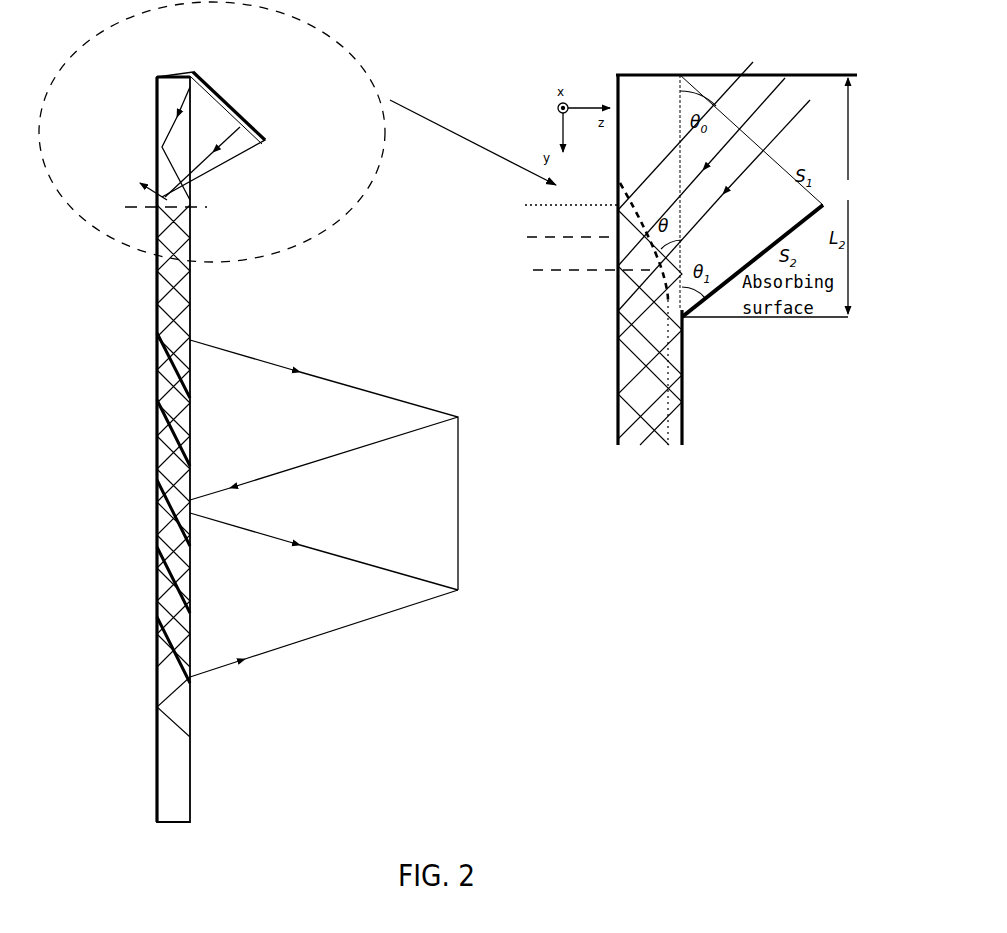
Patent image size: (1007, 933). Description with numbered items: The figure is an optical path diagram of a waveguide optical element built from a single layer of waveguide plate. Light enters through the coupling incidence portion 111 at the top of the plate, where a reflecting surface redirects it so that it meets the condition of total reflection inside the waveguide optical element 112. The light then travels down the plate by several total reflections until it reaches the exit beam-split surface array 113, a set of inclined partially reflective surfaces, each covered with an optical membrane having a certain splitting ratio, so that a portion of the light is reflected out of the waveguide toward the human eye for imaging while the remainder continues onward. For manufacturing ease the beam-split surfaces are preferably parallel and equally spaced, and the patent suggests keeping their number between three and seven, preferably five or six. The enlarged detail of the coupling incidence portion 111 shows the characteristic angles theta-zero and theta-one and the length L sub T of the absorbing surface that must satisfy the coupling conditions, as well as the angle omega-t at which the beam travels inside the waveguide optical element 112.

The coupling incidence portion 111 is at (207, 183).
The waveguide optical element 112 is at (168, 302).
The exit beam-split surface array 113 is at (140, 343).